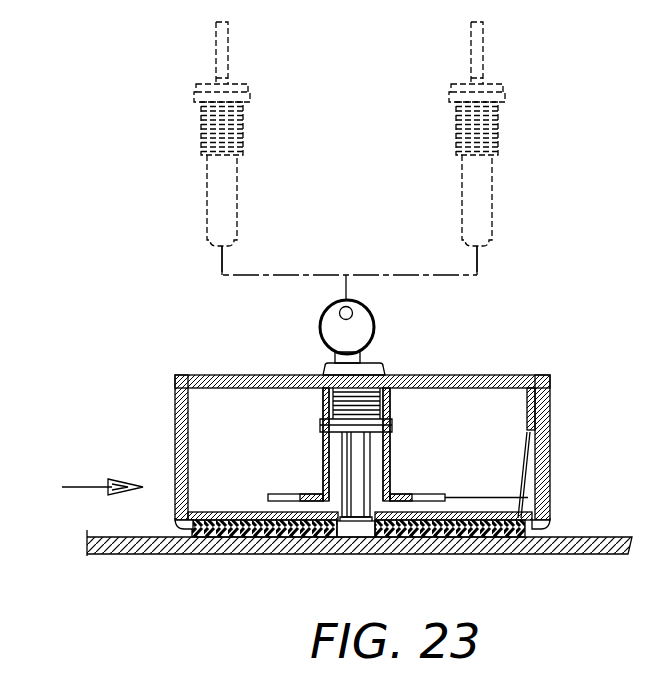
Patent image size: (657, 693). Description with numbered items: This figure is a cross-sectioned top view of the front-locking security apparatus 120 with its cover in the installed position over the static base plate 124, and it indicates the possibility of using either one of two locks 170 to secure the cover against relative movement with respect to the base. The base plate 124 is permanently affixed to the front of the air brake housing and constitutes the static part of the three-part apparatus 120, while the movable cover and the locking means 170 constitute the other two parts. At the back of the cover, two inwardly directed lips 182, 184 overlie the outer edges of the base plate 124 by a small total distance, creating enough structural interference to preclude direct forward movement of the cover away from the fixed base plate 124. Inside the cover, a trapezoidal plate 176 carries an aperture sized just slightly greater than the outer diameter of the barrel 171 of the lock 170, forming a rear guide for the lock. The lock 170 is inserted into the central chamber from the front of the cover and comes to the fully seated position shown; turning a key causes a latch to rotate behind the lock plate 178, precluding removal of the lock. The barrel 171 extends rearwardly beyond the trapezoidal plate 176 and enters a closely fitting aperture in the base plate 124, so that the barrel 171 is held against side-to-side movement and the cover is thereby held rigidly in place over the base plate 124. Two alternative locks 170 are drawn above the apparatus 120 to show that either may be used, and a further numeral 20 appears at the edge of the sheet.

The lock 170 is at (250, 88).
The front-locking security apparatus 120 is at (552, 352).
The lock plate 178 is at (392, 423).
The lock barrel 171 is at (367, 483).
The trapezoidal plate 176 is at (300, 494).
The base plate 124 is at (250, 522).
The inwardly directed lip 184 is at (176, 528).
The inwardly directed lip 182 is at (546, 529).
The apparatus 20 is at (647, 103).